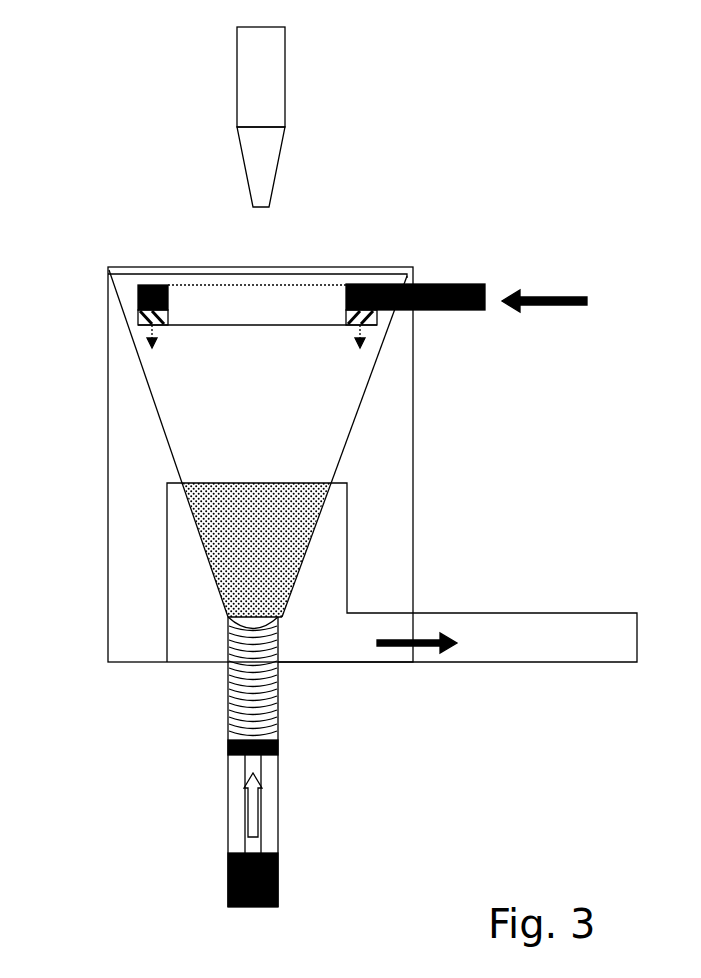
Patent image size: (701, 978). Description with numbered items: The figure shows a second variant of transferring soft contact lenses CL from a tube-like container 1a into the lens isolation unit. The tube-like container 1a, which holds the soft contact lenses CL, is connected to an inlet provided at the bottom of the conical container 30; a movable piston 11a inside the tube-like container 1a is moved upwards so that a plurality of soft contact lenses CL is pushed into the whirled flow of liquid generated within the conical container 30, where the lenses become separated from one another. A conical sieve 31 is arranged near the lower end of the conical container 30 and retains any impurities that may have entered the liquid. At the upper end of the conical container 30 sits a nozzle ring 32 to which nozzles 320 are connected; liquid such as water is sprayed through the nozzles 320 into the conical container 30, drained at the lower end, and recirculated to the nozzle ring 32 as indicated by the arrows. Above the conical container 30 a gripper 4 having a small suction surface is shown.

The gripper 4 is at (400, 120).
The conical container 30 is at (360, 412).
The conical sieve 31 is at (270, 559).
The nozzle ring 32 is at (128, 300).
The nozzles 320 is at (128, 326).
The tube-like container 1a is at (187, 718).
The movable piston 11a is at (293, 755).
The soft contact lenses CL is at (219, 637).